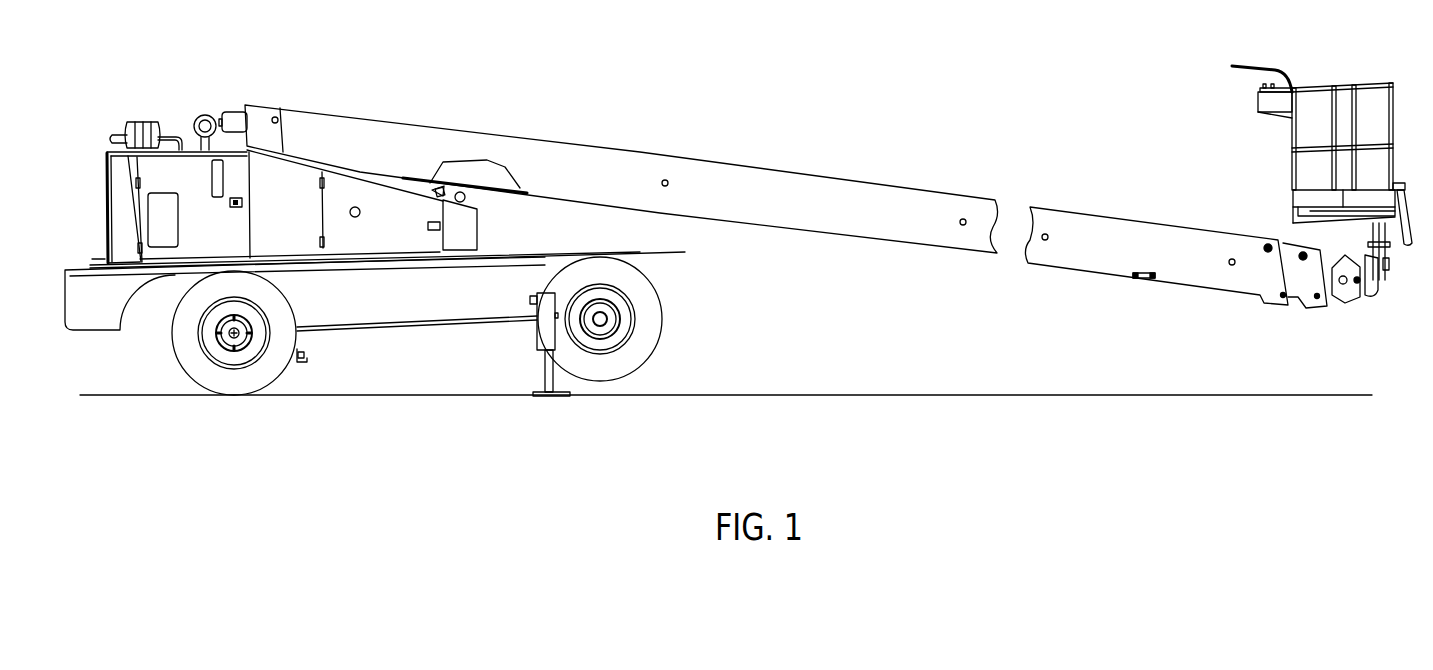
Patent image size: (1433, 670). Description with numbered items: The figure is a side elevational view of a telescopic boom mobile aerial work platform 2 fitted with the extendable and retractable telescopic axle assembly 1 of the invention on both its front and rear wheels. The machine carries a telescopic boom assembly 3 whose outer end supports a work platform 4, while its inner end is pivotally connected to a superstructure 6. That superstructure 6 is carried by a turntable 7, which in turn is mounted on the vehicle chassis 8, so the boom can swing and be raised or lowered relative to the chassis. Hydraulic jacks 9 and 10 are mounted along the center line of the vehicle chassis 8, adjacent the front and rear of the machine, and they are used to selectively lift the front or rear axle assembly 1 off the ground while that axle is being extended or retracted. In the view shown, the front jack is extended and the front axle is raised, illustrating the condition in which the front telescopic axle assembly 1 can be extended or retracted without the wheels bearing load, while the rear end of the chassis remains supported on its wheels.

The telescopic axle assembly 1 is at (262, 326).
The mobile aerial work platform 2 is at (636, 121).
The telescopic boom assembly 3 is at (1078, 225).
The work platform 4 is at (1393, 168).
The superstructure 6 is at (282, 196).
The turntable 7 is at (478, 251).
The vehicle chassis 8 is at (470, 289).
The hydraulic jack 9 is at (543, 338).
The hydraulic jack 10 is at (299, 356).